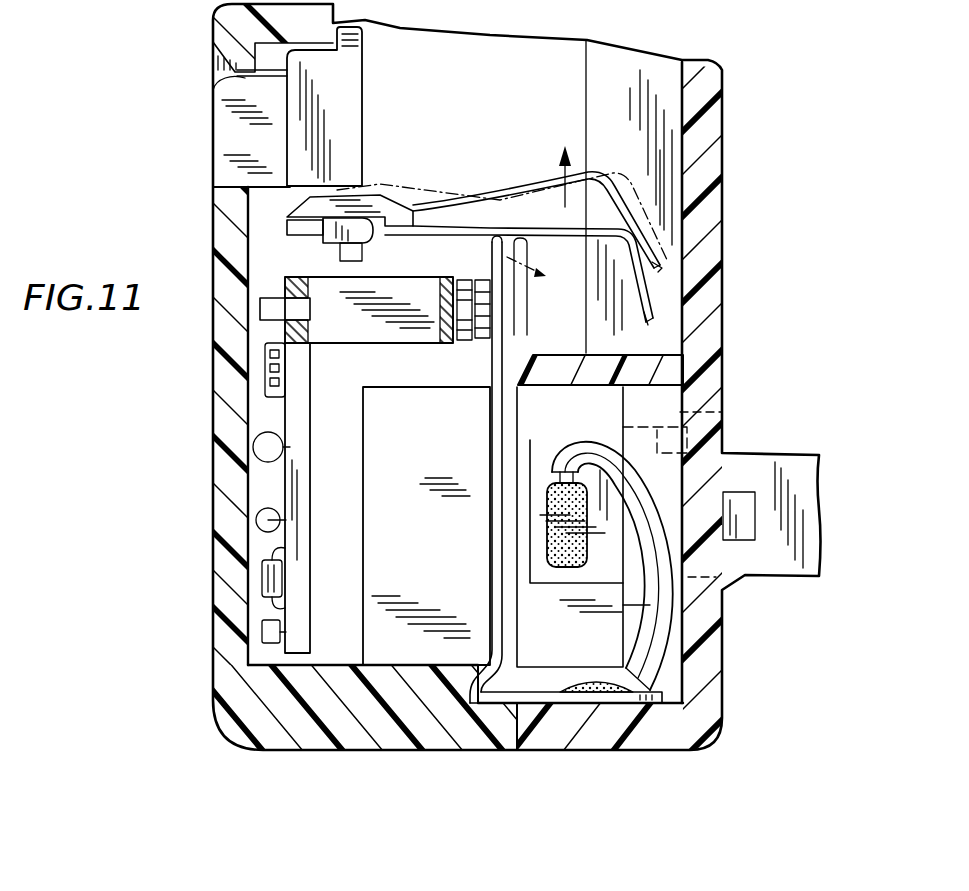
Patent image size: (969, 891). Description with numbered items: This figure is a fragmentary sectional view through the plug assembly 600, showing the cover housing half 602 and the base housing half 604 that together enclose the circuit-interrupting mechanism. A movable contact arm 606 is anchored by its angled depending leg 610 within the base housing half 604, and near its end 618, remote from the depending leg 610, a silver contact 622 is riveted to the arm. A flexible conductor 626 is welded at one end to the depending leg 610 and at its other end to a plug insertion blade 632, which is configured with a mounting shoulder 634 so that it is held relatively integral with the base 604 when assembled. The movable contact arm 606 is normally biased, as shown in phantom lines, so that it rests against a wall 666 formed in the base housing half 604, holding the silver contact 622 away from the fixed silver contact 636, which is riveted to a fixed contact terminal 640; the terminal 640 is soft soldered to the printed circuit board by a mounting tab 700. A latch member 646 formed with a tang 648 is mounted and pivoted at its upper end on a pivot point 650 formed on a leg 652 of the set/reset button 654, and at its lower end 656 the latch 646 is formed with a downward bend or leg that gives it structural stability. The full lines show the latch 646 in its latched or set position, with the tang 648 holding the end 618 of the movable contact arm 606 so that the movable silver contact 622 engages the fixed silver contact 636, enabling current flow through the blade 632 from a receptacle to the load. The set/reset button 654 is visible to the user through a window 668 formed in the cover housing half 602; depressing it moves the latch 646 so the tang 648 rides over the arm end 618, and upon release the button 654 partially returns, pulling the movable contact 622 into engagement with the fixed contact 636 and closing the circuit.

The plug assembly 600 is at (205, 547).
The cover housing half 602 is at (243, 17).
The base housing half 604 is at (713, 86).
The movable contact arm 606 is at (488, 434).
The angled depending leg 610 is at (660, 703).
The end of movable arm 618 is at (490, 255).
The silver contact 622 is at (484, 340).
The flexible conductor 626 is at (672, 668).
The plug insertion blade 632 is at (800, 462).
The mounting shoulder 634 is at (728, 452).
The fixed silver contact 636 is at (455, 346).
The fixed contact terminal 640 is at (343, 343).
The latch member 646 is at (530, 186).
The tang 648 is at (480, 192).
The pivot point 650 is at (287, 212).
The leg of set/reset button 652 is at (300, 243).
The set/reset button 654 is at (238, 136).
The lower end of latch 656 is at (655, 315).
The wall 666 is at (568, 368).
The window 668 is at (217, 81).
The mounting tab 700 is at (267, 309).